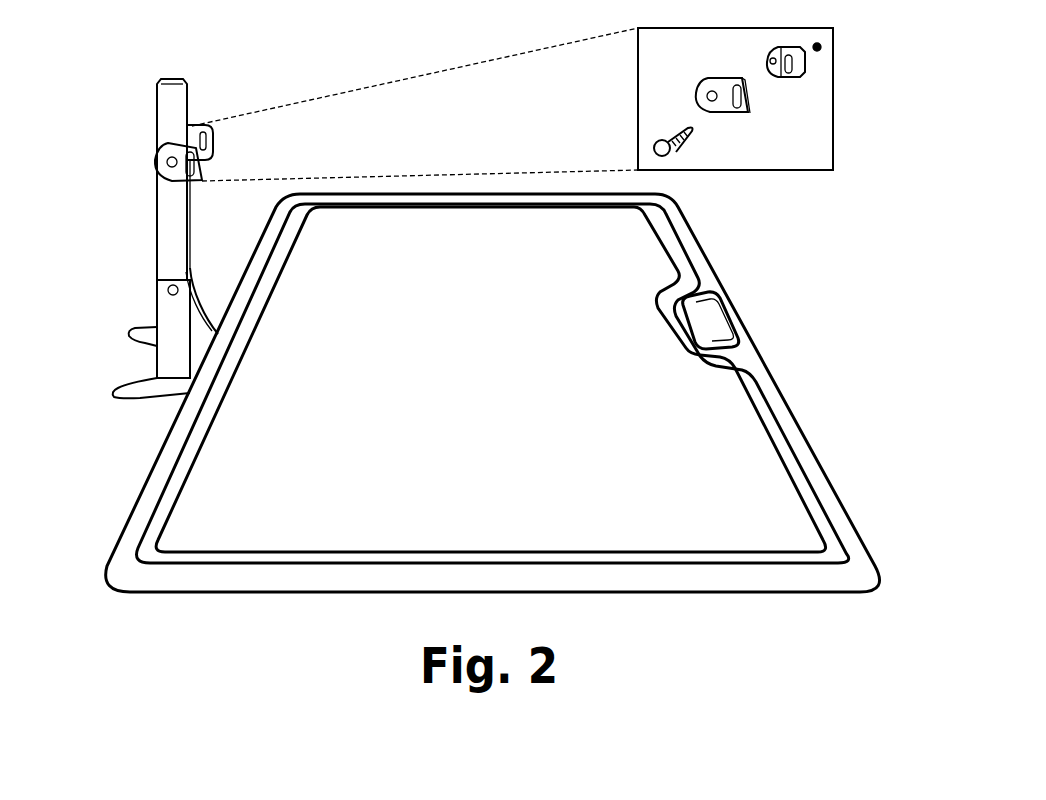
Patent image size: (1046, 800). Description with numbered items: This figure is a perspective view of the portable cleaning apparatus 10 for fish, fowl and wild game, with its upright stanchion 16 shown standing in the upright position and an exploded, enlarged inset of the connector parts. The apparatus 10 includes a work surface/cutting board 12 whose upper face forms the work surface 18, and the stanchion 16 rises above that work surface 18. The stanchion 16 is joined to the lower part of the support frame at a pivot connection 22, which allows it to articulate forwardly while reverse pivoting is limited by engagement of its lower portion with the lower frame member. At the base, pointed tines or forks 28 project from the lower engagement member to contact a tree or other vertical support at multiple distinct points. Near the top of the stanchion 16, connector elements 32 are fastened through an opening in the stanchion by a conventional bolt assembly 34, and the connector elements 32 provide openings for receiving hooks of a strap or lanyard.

The apparatus 10 is at (758, 316).
The work surface/cutting board 12 is at (722, 413).
The upright stanchion 16 is at (164, 117).
The work surface 18 is at (737, 483).
The pivot connection 22 is at (168, 286).
The tines or forks 28 is at (112, 393).
The connector elements 32 is at (800, 76).
The bolt assembly 34 is at (692, 148).